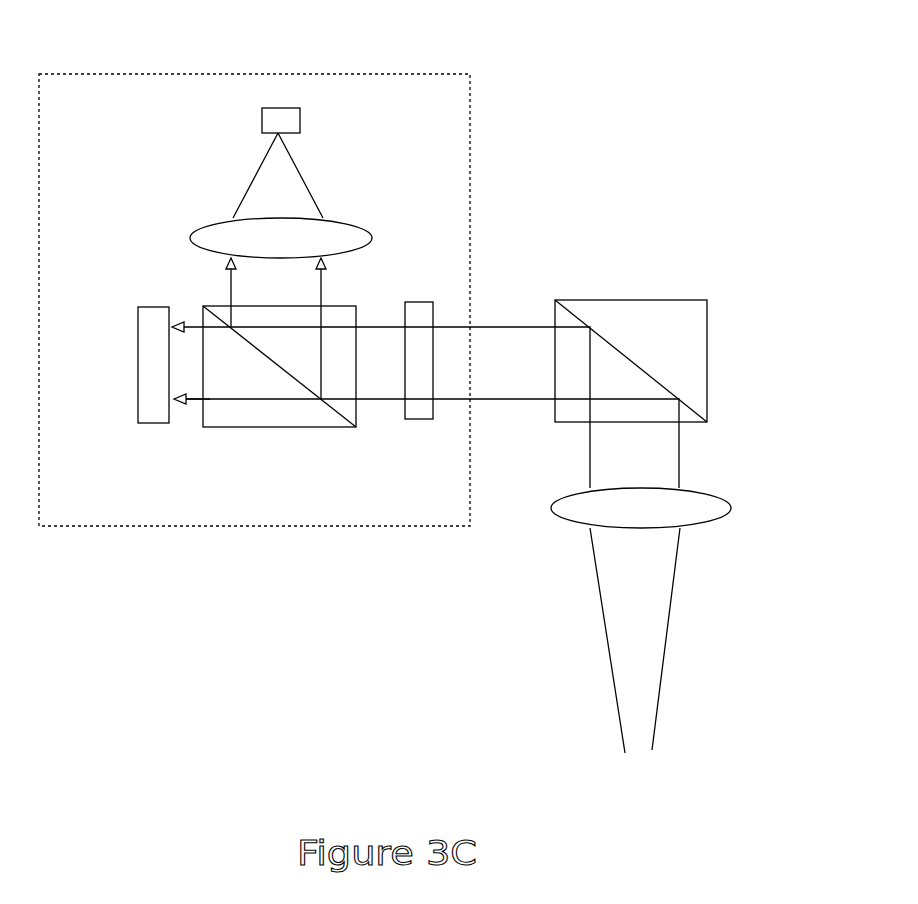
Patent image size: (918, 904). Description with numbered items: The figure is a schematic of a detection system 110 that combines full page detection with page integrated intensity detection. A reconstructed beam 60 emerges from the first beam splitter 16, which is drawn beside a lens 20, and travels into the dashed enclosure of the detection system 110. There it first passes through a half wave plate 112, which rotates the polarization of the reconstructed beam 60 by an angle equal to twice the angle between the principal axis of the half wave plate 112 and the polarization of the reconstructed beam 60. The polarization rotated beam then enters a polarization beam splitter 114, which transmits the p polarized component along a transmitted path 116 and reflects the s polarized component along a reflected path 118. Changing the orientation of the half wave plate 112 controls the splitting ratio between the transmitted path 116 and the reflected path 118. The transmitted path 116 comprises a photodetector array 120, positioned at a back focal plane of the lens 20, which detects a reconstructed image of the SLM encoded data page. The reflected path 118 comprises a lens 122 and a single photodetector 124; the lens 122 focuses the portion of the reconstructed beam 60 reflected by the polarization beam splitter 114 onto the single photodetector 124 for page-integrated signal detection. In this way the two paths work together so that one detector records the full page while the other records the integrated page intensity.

The detection system 110 is at (258, 74).
The single photodetector 124 is at (300, 118).
The lens 122 is at (363, 237).
The reflected path 118 is at (330, 277).
The reconstructed beam 60 is at (511, 327).
The photodetector array 120 is at (153, 397).
The transmitted path 116 is at (192, 399).
The polarization beam splitter 114 is at (240, 427).
The half wave plate 112 is at (422, 410).
The first beam splitter 16 is at (672, 345).
The lens 20 is at (718, 505).